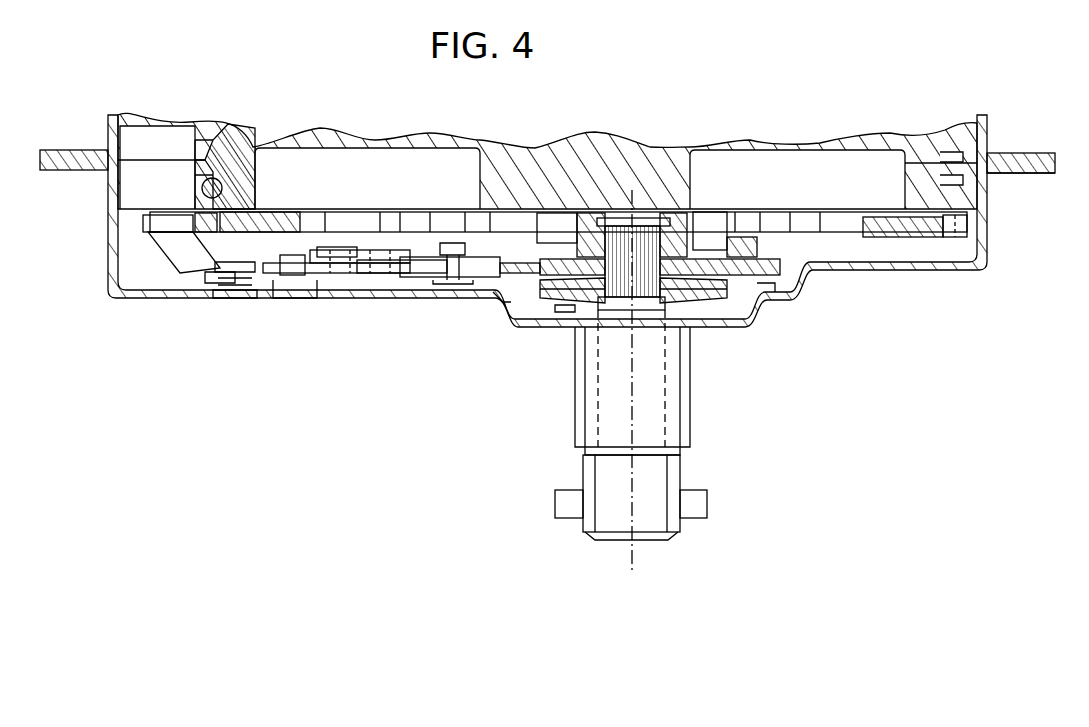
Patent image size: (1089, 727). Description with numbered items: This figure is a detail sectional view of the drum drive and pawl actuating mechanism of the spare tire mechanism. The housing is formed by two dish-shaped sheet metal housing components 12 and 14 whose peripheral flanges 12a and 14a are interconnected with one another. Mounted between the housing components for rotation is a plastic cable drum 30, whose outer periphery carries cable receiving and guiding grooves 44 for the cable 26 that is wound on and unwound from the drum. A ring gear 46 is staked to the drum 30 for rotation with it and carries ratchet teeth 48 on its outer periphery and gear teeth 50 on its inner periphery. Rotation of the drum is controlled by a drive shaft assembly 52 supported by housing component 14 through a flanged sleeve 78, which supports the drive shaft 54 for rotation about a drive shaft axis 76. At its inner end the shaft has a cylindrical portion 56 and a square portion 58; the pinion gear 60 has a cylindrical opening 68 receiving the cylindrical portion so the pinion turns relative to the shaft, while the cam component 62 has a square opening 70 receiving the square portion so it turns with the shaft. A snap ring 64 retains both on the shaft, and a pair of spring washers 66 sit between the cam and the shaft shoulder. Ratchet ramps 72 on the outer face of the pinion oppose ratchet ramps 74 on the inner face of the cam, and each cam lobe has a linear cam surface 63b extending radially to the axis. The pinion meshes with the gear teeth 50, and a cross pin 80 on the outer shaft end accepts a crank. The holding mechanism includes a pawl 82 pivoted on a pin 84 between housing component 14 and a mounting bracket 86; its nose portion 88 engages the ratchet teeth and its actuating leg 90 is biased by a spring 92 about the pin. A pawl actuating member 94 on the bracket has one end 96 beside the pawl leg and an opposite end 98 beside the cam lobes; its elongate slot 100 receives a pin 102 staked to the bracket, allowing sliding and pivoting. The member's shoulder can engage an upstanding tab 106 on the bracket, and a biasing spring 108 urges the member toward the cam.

The housing component 12 is at (110, 142).
The peripheral flange 12a is at (1010, 155).
The housing component 14 is at (850, 270).
The peripheral flange 14a is at (1015, 172).
The cable 26 is at (225, 176).
The cable drum 30 is at (967, 203).
The cable receiving and guiding grooves 44 is at (213, 168).
The ring gear 46 is at (937, 238).
The ratchet teeth 48 is at (203, 233).
The gear teeth 50 is at (333, 212).
The drive shaft assembly 52 is at (565, 312).
The drive shaft 54 is at (686, 470).
The cylindrical portion 56 is at (630, 168).
The square portion 58 is at (624, 290).
The pinion gear 60 is at (714, 216).
The cam component 62 is at (770, 285).
The linear cam surface 63b is at (502, 303).
The snap ring 64 is at (668, 192).
The spring washers 66 is at (681, 285).
The cylindrical opening 68 is at (652, 228).
The square opening 70 is at (655, 272).
The ratchet ramps 72 is at (566, 257).
The ratchet ramps 74 is at (722, 258).
The drive shaft axis 76 is at (630, 553).
The flanged sleeve 78 is at (690, 398).
The cross pin 80 is at (695, 516).
The pawl 82 is at (155, 252).
The pin 84 is at (210, 283).
The mounting bracket 86 is at (397, 252).
The nose portion 88 is at (190, 217).
The actuating leg 90 is at (275, 273).
The biasing spring 92 is at (243, 298).
The pawl actuating member 94 is at (355, 275).
The end 96 is at (293, 255).
The end 98 is at (465, 247).
The elongate slot 100 is at (325, 282).
The pin 102 is at (385, 280).
The upstanding tab 106 is at (415, 280).
The biasing spring 108 is at (455, 286).